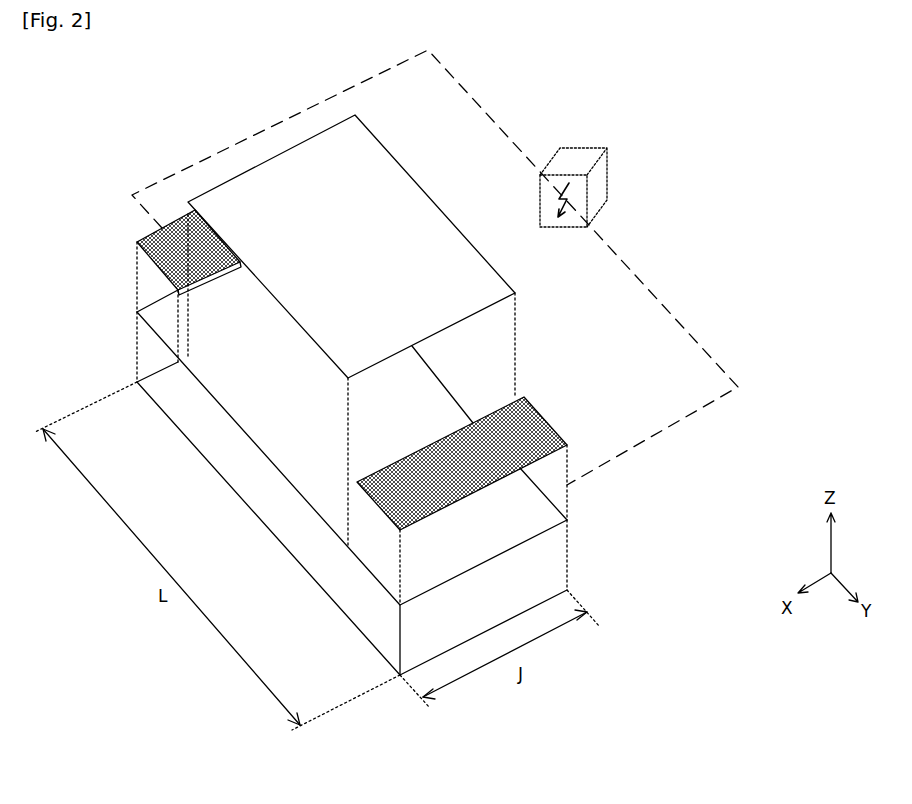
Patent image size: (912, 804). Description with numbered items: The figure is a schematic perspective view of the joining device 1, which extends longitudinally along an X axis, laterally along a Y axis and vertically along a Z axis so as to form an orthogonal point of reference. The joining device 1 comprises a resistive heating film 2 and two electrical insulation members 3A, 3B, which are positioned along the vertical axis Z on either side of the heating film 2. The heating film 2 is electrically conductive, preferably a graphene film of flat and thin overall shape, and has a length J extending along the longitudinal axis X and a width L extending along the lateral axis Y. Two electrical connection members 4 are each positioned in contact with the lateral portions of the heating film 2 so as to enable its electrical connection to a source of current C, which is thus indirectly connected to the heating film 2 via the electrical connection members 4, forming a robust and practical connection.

The joining device 1 is at (748, 192).
The resistive heating film 2 is at (255, 445).
The electrical insulation member 3A is at (347, 620).
The electrical insulation member 3B is at (253, 275).
The electrical connection member 4 is at (143, 256).
The source of current C is at (607, 167).